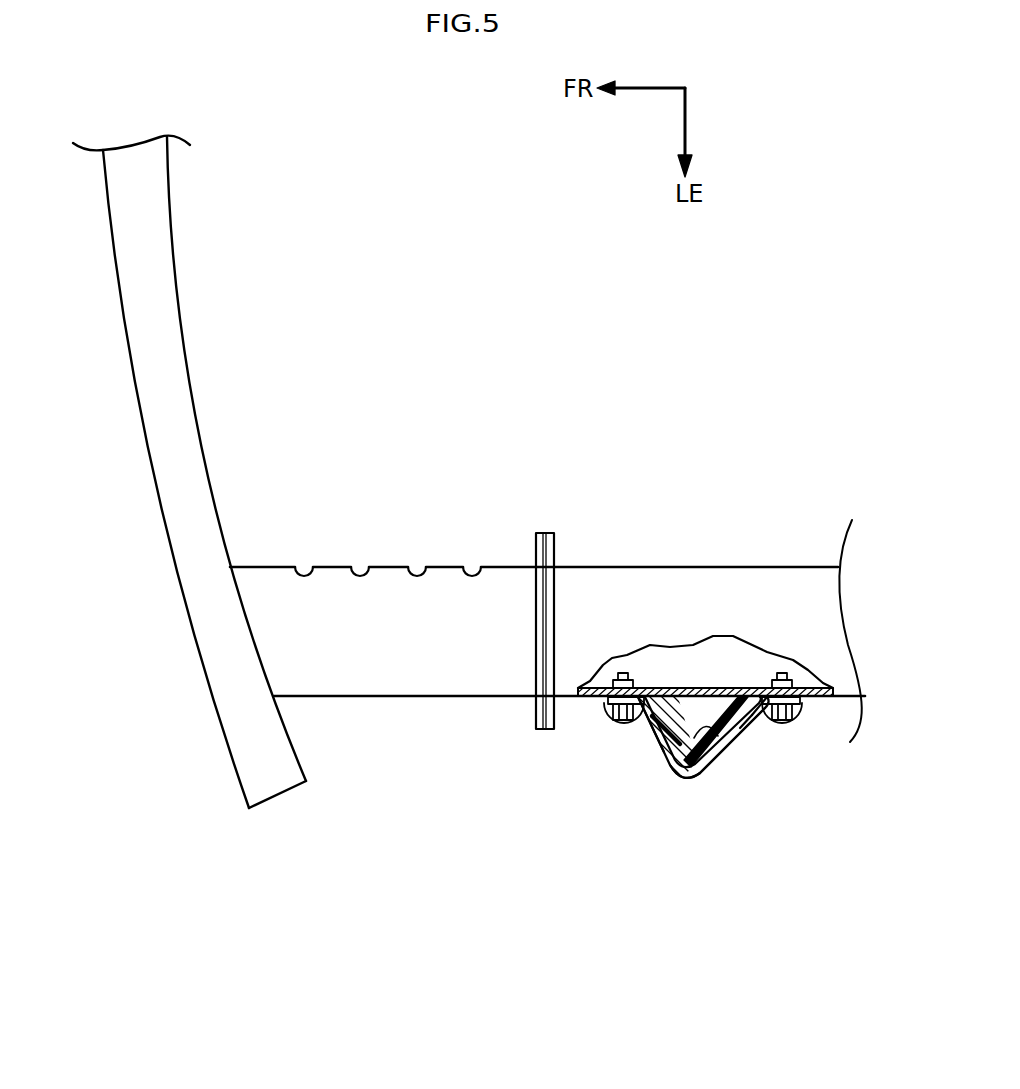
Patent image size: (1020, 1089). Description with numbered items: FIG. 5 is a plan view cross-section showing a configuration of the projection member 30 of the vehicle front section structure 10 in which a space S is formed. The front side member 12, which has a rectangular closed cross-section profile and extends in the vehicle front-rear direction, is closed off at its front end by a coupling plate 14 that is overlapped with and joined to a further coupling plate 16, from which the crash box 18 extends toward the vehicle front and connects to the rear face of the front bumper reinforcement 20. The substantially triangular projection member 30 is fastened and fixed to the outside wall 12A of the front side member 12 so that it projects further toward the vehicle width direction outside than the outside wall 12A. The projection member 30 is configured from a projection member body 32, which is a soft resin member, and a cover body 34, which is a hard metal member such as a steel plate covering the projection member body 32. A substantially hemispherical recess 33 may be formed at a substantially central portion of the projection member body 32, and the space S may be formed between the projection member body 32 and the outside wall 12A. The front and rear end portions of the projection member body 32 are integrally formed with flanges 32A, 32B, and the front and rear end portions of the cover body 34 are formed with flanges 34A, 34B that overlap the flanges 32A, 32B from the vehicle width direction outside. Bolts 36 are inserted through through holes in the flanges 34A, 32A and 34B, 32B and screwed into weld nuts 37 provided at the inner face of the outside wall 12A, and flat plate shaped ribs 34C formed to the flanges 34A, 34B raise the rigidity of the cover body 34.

The vehicle front section structure 10 is at (698, 845).
The front side member 12 is at (757, 567).
The outside wall 12A is at (668, 688).
The coupling plate 14 is at (556, 548).
The coupling plate 16 is at (535, 548).
The crash box 18 is at (333, 585).
The front bumper reinforcement 20 is at (176, 310).
The projection member 30 is at (707, 786).
The projection member body 32 is at (685, 785).
The flange 32A is at (608, 704).
The flange 32B is at (803, 706).
The recess 33 is at (728, 762).
The cover body 34 is at (670, 772).
The flange 34A is at (632, 728).
The flange 34B is at (800, 732).
The rib 34C is at (655, 740).
The bolt 36 is at (622, 725).
The weld nut 37 is at (620, 677).
The space S is at (700, 708).